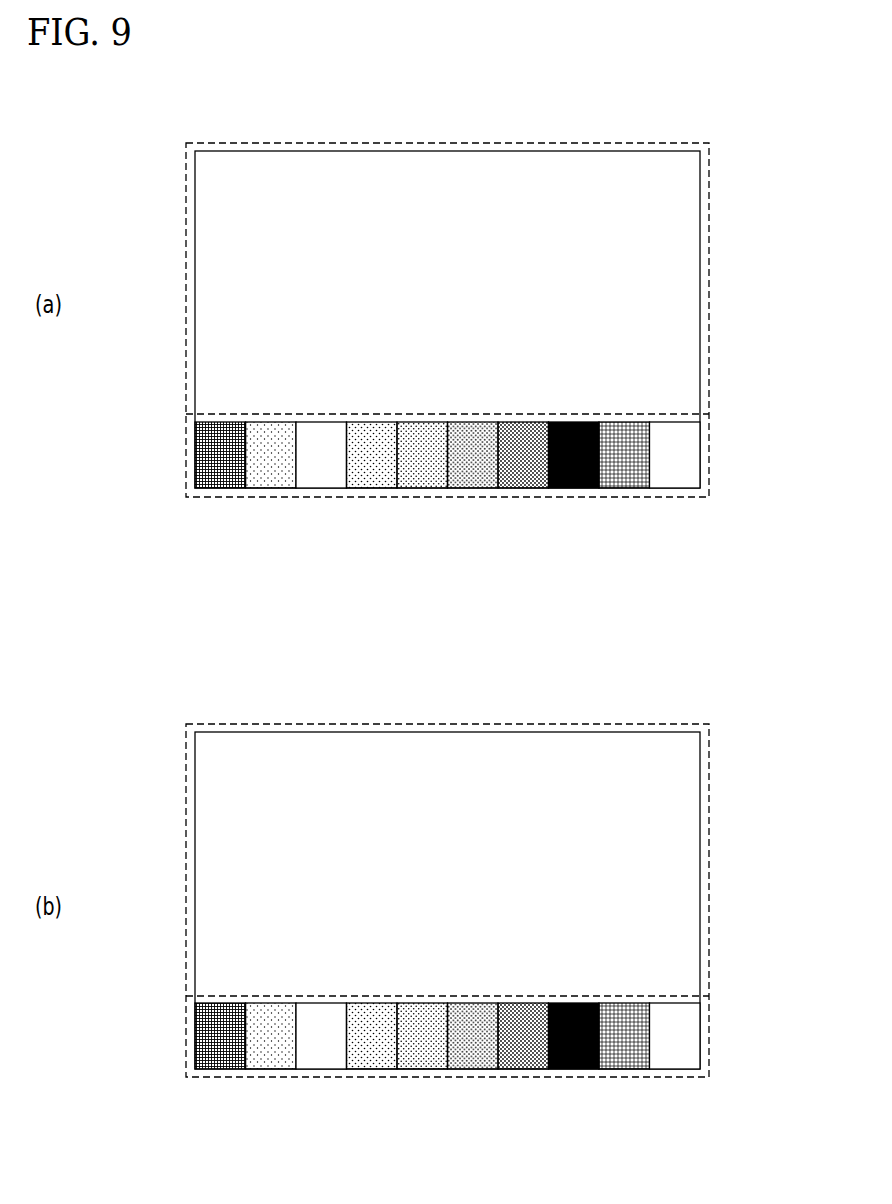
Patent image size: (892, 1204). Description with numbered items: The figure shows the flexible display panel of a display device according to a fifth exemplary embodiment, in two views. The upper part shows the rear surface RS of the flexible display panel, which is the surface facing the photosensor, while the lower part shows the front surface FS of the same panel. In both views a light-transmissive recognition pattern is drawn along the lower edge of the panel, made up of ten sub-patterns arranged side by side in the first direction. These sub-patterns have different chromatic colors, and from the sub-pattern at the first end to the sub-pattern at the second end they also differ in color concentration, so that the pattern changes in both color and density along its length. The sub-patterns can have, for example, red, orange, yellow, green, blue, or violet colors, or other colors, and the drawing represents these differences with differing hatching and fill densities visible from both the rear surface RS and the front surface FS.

The rear surface RS is at (680, 293).
The front surface FS is at (680, 860).